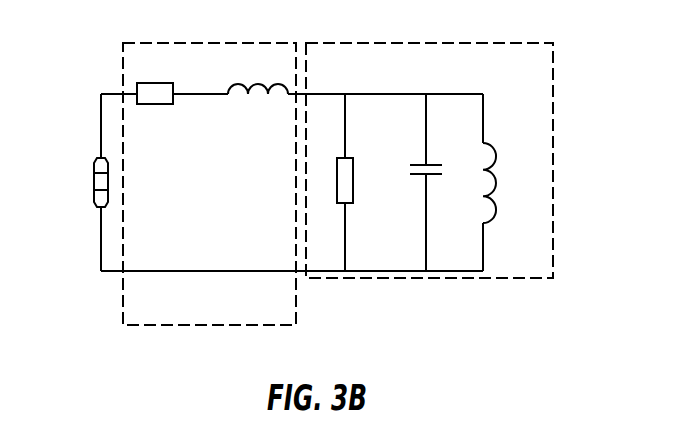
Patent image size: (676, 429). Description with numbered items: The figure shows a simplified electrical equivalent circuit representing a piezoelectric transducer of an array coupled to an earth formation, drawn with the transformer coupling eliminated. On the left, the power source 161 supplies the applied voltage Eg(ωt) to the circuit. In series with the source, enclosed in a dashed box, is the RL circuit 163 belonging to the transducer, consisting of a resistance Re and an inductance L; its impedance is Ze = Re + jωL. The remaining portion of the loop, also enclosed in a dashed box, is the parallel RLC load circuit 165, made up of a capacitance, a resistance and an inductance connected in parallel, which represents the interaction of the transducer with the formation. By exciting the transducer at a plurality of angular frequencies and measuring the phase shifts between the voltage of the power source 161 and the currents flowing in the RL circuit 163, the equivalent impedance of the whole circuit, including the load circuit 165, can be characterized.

The power source 161 is at (95, 165).
The RL circuit 163 is at (218, 58).
The parallel RLC load circuit 165 is at (410, 43).